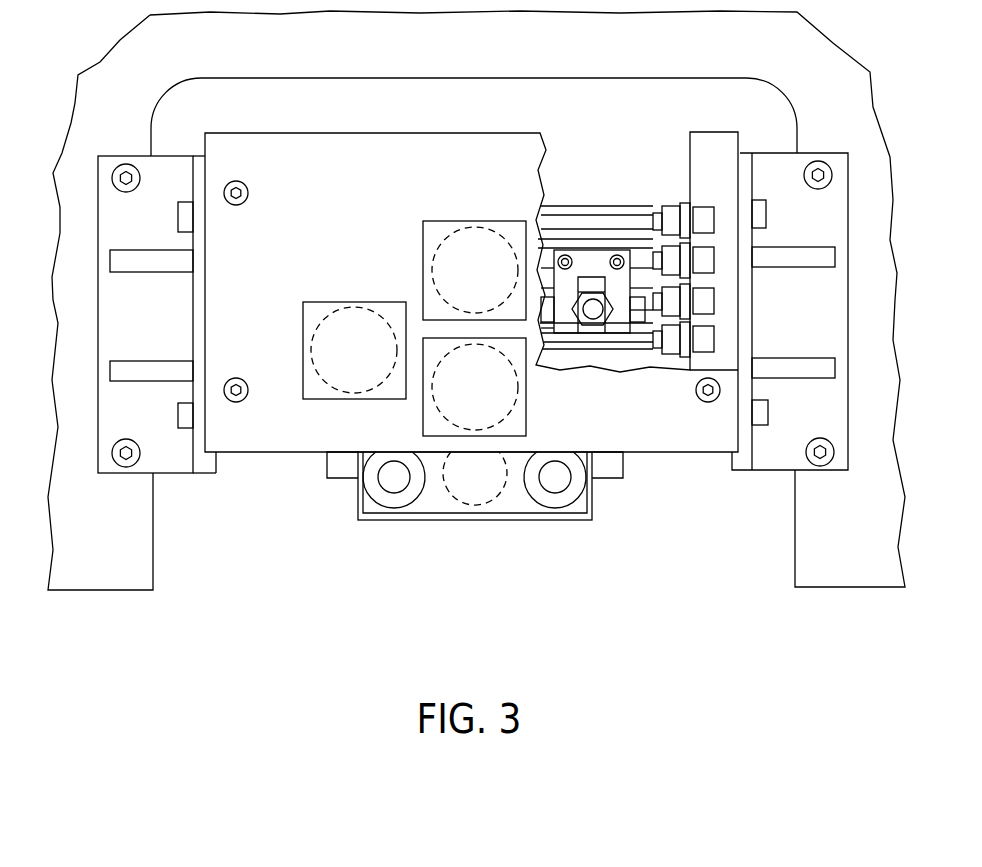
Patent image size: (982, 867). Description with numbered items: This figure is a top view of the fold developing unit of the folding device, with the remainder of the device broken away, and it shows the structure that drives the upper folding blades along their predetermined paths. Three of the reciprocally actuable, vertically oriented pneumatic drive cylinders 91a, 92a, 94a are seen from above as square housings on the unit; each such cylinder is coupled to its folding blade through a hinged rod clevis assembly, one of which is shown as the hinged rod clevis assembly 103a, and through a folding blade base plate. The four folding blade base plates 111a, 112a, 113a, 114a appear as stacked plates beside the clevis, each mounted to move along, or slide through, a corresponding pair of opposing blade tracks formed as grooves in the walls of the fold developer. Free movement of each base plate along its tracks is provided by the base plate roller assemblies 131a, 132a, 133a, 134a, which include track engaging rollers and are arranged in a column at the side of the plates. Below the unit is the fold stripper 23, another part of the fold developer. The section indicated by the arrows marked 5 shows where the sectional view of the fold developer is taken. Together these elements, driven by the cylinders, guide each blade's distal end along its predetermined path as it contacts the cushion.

The fold stripper 23 is at (462, 520).
The pneumatic drive cylinder 91a is at (453, 404).
The pneumatic drive cylinder 92a is at (330, 366).
The pneumatic drive cylinder 94a is at (497, 289).
The hinged rod clevis assembly 103a is at (582, 260).
The folding blade base plate 111a is at (585, 345).
The folding blade base plate 112a is at (633, 332).
The folding blade base plate 113a is at (645, 262).
The folding blade base plate 114a is at (600, 220).
The base plate roller assembly 131a is at (672, 352).
The base plate roller assembly 132a is at (677, 305).
The base plate roller assembly 133a is at (677, 262).
The base plate roller assembly 134a is at (675, 217).
The section line 5- 5 is at (682, 263).